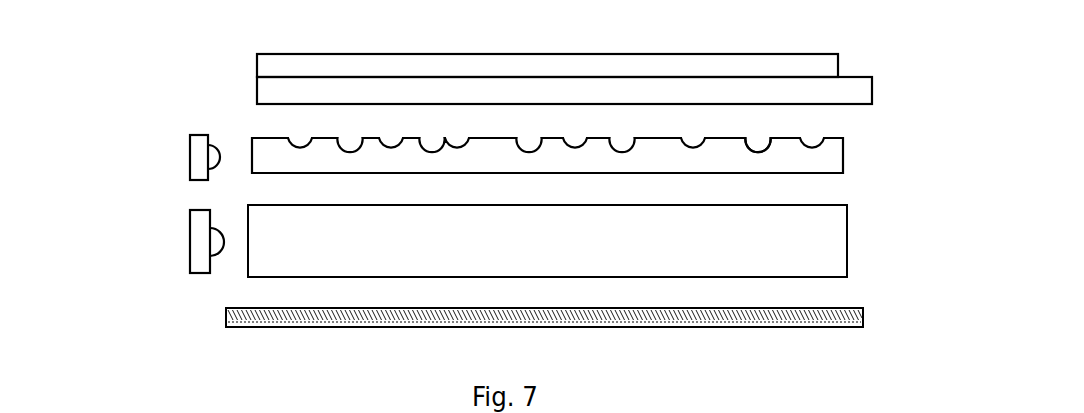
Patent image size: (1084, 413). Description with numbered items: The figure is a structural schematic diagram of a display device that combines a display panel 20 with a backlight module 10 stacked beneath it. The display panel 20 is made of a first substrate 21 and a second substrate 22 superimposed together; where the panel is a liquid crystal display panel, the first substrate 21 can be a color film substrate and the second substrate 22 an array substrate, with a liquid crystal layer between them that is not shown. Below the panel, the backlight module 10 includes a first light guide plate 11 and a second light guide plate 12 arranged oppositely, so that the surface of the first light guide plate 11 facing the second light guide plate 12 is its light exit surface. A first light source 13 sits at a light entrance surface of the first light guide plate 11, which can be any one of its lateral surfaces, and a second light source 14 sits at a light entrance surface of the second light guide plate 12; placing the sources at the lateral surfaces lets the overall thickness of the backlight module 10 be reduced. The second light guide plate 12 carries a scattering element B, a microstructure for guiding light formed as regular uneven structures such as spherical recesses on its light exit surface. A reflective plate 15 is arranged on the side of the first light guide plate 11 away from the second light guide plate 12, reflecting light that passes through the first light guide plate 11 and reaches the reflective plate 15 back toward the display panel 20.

The backlight module 10 is at (131, 150).
The first light guide plate 11 is at (248, 260).
The second light guide plate 12 is at (325, 162).
The first light source 13 is at (202, 243).
The second light source 14 is at (198, 153).
The reflective plate 15 is at (282, 315).
The display panel 20 is at (127, 65).
The first substrate 21 is at (287, 68).
The second substrate 22 is at (287, 93).
The scattering element B is at (767, 151).